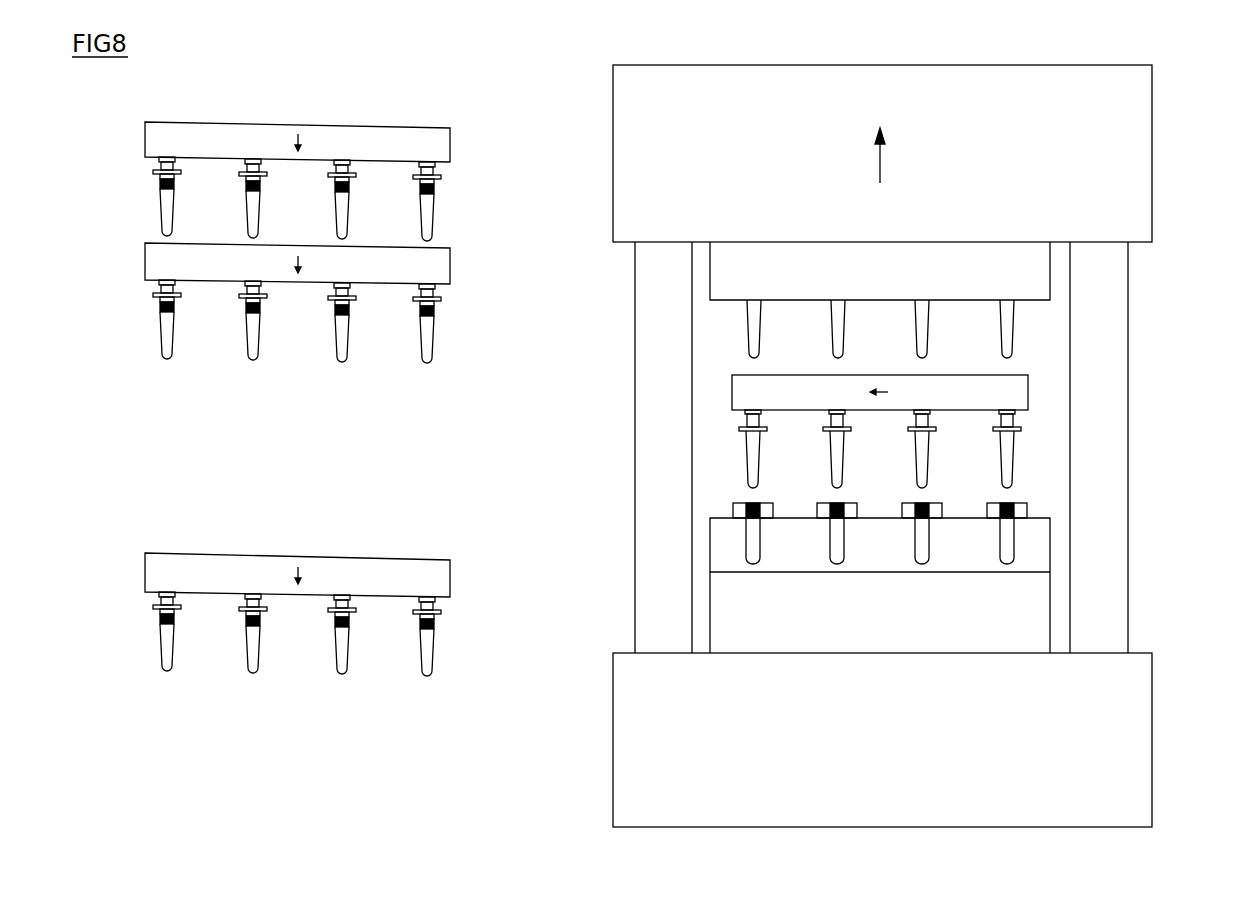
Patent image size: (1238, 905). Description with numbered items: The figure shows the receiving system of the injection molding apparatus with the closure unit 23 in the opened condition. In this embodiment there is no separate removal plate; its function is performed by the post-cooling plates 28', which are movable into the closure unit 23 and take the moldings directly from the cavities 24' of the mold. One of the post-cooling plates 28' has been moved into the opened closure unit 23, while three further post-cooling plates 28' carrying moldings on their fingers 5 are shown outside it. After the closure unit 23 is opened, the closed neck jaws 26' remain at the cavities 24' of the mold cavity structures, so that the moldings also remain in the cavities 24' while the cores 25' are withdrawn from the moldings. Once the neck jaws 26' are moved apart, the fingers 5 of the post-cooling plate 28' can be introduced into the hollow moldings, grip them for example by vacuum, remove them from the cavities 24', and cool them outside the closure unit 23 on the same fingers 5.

The closure unit 23 is at (1077, 122).
The cores 25' is at (965, 300).
The post-cooling plate 28' is at (636, 392).
The fingers 5 is at (1010, 462).
The neck jaws 26' is at (967, 492).
The cavities 24' is at (967, 585).